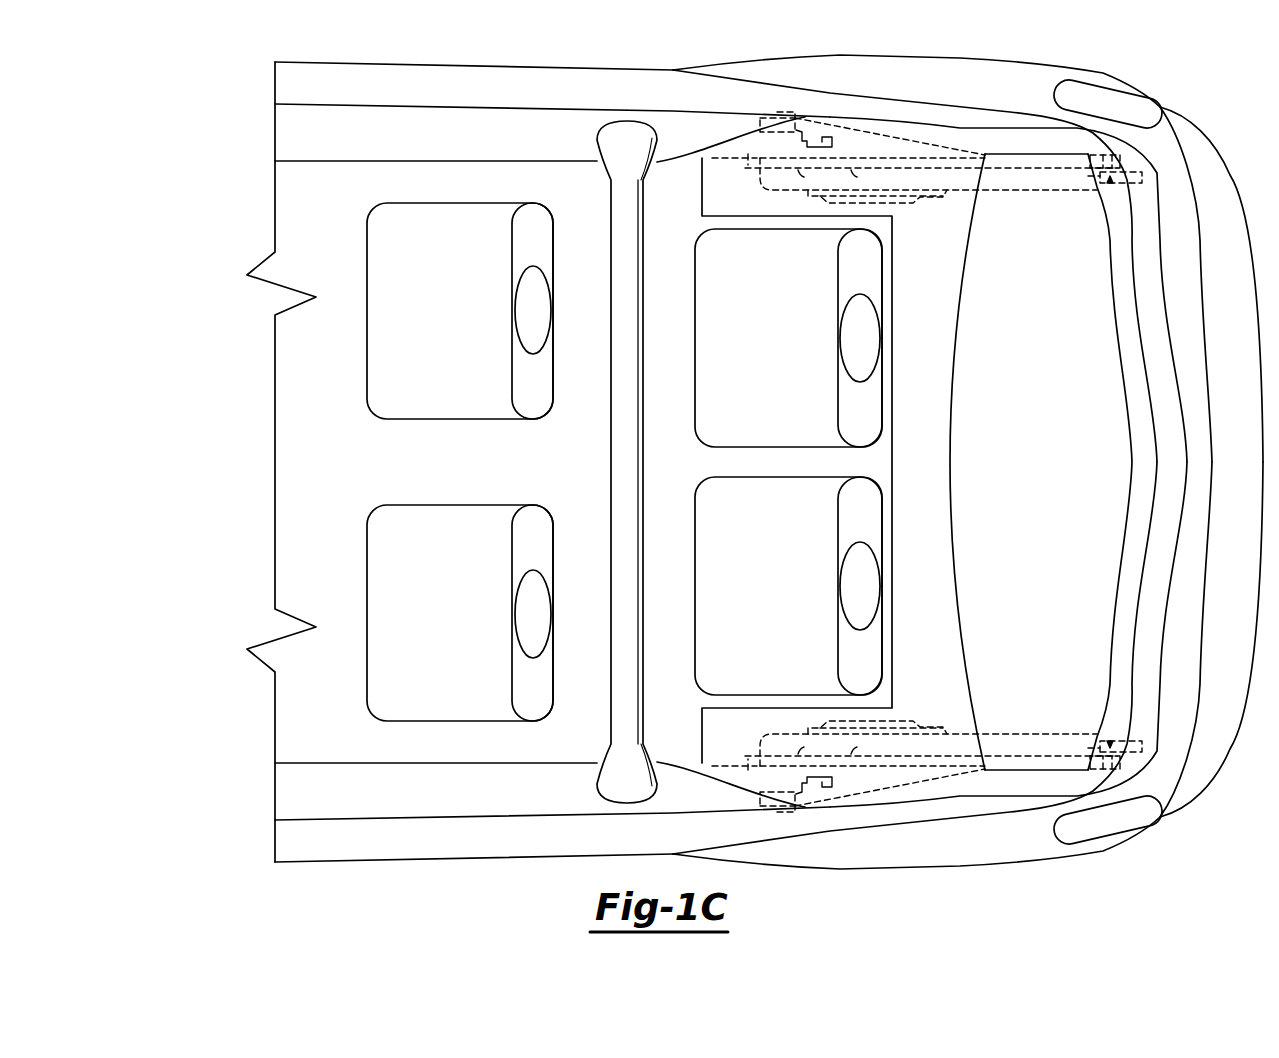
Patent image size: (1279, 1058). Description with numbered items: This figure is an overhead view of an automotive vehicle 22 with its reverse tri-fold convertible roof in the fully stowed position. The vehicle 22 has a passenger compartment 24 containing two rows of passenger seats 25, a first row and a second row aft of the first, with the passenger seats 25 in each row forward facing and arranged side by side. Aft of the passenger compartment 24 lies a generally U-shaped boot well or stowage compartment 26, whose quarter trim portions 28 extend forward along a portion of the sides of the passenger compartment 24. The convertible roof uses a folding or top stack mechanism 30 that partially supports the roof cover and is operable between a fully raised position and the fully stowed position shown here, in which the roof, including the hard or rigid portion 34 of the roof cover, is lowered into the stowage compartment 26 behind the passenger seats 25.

The automotive vehicle 22 is at (405, 837).
The passenger compartment 24 is at (305, 456).
The passenger seats 25 is at (460, 370).
The stowage compartment 26 is at (935, 672).
The quarter trim portions 28 is at (720, 192).
The top stack mechanism 30 is at (973, 823).
The hard portion 34 is at (1098, 357).